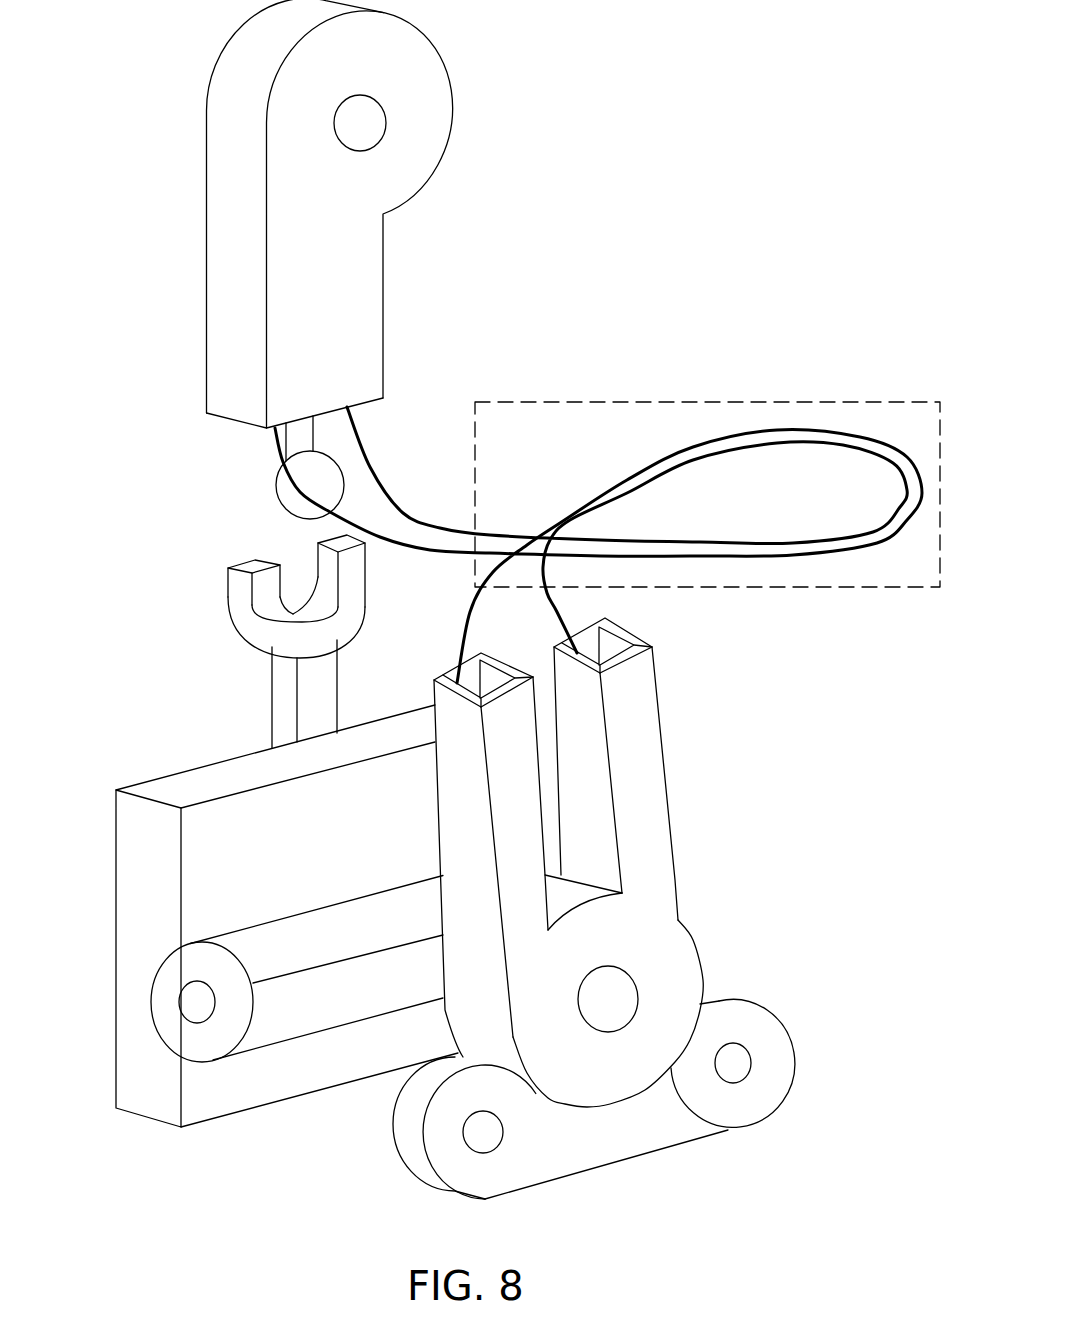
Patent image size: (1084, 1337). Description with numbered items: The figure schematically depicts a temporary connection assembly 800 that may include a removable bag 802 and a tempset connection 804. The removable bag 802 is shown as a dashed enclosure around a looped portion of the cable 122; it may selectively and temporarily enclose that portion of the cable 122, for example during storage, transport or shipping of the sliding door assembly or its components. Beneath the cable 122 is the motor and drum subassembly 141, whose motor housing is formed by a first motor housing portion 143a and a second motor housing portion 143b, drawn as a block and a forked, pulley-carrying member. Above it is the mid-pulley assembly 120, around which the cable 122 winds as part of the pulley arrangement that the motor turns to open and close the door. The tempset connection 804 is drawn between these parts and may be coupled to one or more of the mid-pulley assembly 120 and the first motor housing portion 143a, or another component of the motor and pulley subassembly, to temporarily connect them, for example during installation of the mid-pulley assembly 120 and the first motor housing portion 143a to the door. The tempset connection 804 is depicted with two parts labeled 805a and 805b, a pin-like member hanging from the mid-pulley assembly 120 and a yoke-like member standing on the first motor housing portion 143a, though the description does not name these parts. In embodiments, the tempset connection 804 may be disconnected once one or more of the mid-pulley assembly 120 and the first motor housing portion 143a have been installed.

The temporary connection assembly 800 is at (504, 599).
The mid-pulley assembly 120 is at (257, 214).
The cable 122 is at (713, 440).
The removable bag 802 is at (732, 402).
The tempset connection 804 is at (253, 582).
The yoke 805a is at (328, 588).
The pin 805b is at (284, 491).
The motor and drum subassembly 141 is at (431, 896).
The first motor housing portion 143a is at (175, 783).
The second motor housing portion 143b is at (668, 938).